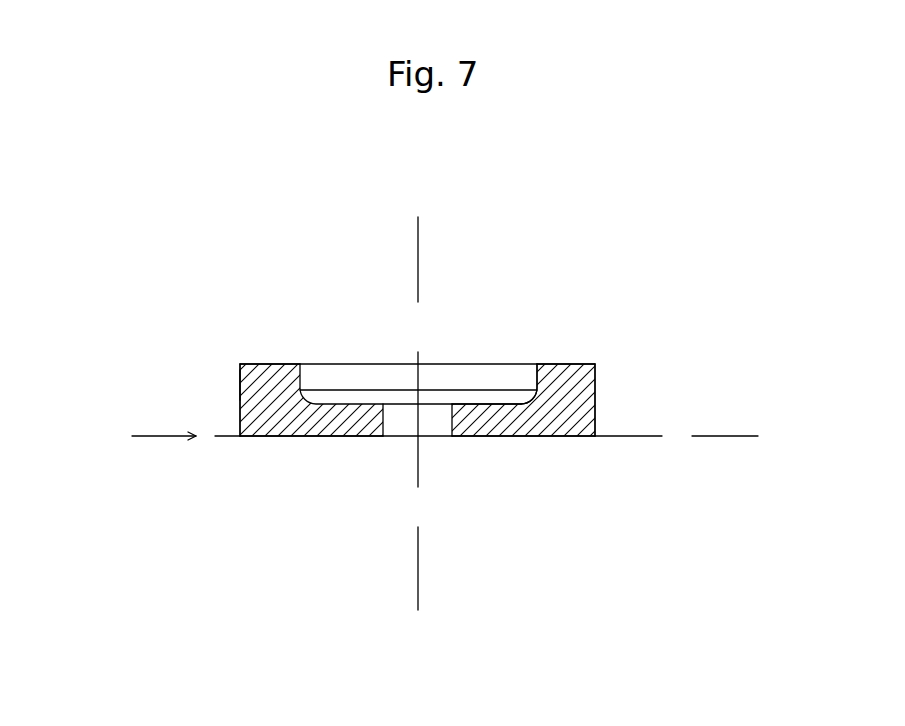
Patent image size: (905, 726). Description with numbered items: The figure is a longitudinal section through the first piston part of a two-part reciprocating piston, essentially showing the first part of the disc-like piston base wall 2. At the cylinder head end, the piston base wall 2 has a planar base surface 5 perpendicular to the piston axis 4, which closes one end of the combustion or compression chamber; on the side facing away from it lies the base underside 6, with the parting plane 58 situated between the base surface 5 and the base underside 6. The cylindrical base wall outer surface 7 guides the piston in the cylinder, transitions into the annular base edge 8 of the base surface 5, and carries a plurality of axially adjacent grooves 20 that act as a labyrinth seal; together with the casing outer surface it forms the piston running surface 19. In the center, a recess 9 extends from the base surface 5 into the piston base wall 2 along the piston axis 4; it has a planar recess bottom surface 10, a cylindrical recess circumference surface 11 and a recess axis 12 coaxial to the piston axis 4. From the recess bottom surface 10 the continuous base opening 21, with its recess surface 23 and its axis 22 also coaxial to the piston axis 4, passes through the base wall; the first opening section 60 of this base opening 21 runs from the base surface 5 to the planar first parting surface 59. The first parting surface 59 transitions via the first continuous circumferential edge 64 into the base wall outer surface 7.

The piston base wall 2 is at (569, 363).
The piston axis 4 is at (507, 437).
The base surface 5 is at (270, 363).
The base underside 6 is at (385, 407).
The base wall outer surface 7 is at (597, 407).
The base edge 8 is at (596, 363).
The recess 9 is at (493, 390).
The recess bottom surface 10 is at (472, 403).
The recess circumference surface 11 is at (528, 385).
The recess axis 12 is at (507, 437).
The piston running surface 19 is at (238, 414).
The grooves 20 is at (240, 395).
The base opening 21 is at (410, 437).
The recess axis of base opening 22 is at (417, 580).
The recess surface 23 is at (397, 436).
The parting plane 58 is at (730, 437).
The first parting surface 59 is at (558, 437).
The first opening section 60 is at (408, 404).
The first continuous circumferential edge 64 is at (240, 436).